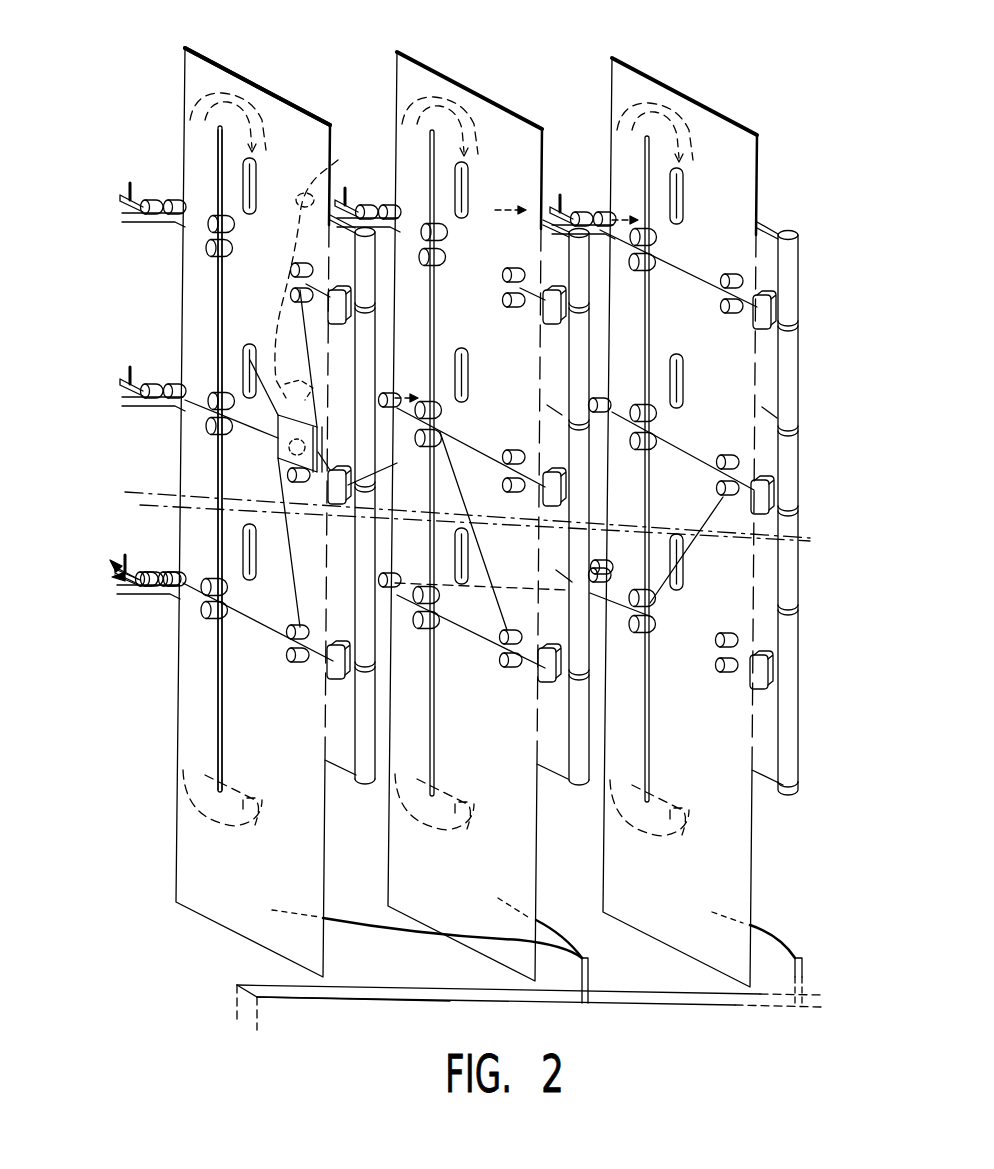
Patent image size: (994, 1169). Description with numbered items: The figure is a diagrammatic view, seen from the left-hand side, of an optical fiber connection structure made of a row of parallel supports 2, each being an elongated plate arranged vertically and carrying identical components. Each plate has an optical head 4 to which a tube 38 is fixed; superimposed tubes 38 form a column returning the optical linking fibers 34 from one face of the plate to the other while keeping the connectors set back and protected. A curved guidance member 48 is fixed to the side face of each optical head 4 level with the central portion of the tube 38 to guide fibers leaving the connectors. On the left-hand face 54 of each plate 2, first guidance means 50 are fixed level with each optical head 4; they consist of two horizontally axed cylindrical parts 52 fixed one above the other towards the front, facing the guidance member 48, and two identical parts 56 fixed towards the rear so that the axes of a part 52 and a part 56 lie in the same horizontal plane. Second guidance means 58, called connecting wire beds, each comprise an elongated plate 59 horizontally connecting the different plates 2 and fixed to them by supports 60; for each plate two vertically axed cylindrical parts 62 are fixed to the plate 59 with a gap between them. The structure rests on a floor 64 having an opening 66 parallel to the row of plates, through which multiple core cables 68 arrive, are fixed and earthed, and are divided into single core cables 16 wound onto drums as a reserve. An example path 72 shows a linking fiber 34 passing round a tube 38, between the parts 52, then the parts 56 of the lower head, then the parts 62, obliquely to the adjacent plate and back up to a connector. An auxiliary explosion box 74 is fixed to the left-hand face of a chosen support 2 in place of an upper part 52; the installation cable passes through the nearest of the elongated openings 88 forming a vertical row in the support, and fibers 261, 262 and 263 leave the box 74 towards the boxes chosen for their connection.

The support 2 is at (188, 58).
The optical head 4 is at (795, 190).
The single core cable 16 is at (410, 942).
The optical linking fiber 34 is at (243, 622).
The tube 38 is at (361, 775).
The guidance member 48 is at (333, 680).
The first guidance means 50 is at (203, 658).
The cylindrical part 52 is at (290, 627).
The left-hand face 54 is at (304, 124).
The cylindrical part 56 is at (200, 617).
The second guidance means 58 is at (118, 515).
The elongated plate 59 is at (175, 592).
The support 60 is at (116, 577).
The vertically axed cylindrical part 62 is at (172, 572).
The floor 64 is at (163, 990).
The opening 66 is at (287, 995).
The multiple core cable 68 is at (592, 975).
The path 72 is at (697, 555).
The auxiliary box 74 is at (278, 418).
The elongated opening 88 is at (245, 358).
The fiber 261 is at (300, 330).
The fiber 262 is at (380, 465).
The fiber 263 is at (308, 568).